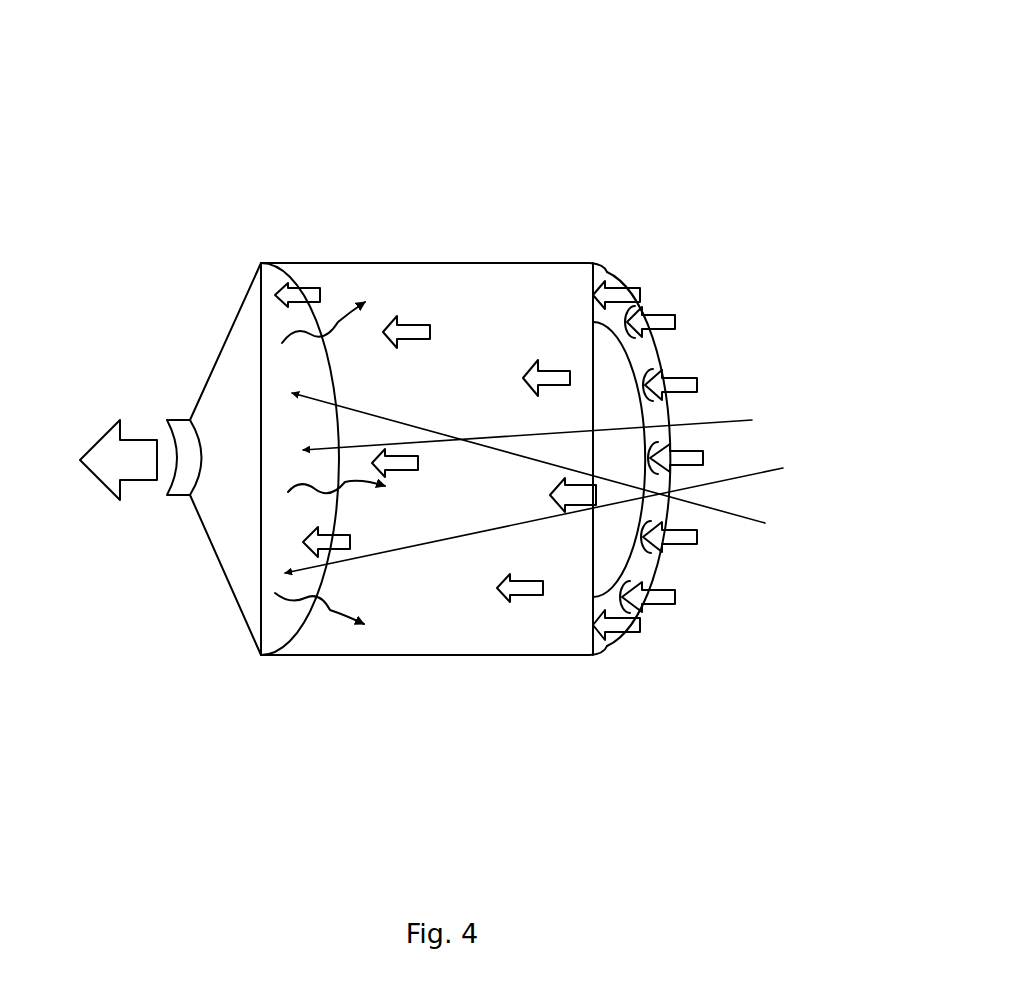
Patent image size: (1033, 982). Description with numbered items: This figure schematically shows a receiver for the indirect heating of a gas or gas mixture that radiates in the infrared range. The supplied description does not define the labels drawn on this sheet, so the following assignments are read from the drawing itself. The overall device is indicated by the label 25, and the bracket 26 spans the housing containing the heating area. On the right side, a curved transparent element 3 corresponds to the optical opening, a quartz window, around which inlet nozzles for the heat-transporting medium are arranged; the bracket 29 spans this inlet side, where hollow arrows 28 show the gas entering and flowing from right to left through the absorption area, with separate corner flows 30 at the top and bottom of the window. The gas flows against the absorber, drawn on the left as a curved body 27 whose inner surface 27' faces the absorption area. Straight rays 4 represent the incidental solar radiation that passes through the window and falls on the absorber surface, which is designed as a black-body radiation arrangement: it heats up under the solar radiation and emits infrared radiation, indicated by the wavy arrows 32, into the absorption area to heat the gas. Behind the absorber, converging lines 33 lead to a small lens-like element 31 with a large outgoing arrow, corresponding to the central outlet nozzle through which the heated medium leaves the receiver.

The light module 25 is at (589, 152).
The optical unit / lens assembly region 26 is at (270, 762).
The lens 27 is at (300, 361).
The lens surface 27' is at (387, 598).
The air flow 28 is at (406, 298).
The heating region 29 is at (797, 270).
The lens 3 is at (606, 393).
The air flow at corners 30 is at (597, 277).
The output lens 31 is at (188, 418).
The heat emission 32 is at (328, 322).
The light guide cone 33 is at (225, 377).
The light rays 4 is at (717, 420).